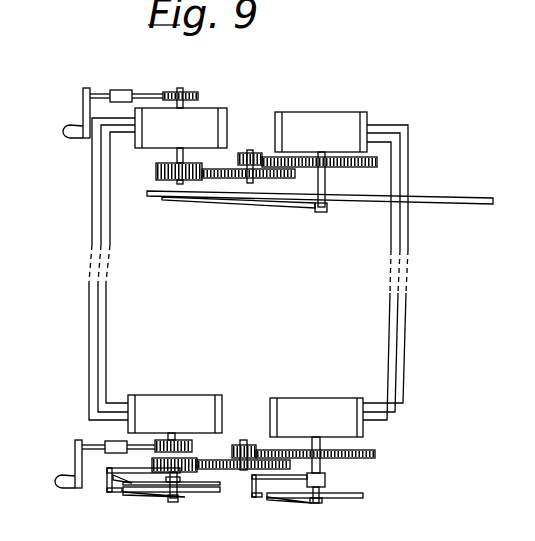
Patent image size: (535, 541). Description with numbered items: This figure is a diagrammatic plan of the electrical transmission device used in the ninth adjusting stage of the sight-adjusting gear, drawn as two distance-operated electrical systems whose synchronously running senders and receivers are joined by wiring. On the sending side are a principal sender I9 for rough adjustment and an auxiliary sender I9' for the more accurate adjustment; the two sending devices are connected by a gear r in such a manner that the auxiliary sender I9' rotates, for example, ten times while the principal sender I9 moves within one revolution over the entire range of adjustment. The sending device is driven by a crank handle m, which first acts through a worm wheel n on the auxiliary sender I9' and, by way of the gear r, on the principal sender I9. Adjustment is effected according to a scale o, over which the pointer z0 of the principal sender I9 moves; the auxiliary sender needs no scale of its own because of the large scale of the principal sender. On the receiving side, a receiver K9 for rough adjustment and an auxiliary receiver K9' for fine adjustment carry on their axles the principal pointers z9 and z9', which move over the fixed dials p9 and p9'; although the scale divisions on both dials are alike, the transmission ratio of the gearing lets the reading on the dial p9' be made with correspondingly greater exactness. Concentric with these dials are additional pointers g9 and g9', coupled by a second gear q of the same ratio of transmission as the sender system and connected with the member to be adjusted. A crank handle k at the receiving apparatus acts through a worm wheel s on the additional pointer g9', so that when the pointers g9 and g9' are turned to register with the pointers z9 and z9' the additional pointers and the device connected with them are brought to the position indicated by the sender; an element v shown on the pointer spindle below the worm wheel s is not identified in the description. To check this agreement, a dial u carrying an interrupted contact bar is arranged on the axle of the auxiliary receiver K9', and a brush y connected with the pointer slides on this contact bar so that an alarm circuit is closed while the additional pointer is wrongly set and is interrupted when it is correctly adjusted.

The crank handle m is at (82, 112).
The worm wheel n is at (163, 93).
The principal sender I9 is at (321, 147).
The auxiliary sender I9' is at (187, 133).
The gear r is at (289, 153).
The scale o is at (381, 198).
The pointer of the principal sender z0 is at (267, 201).
The receiver K9 is at (316, 439).
The auxiliary receiver K9' is at (175, 404).
The worm wheel s is at (157, 442).
The crank handle k is at (76, 460).
The gear v is at (177, 490).
The second gear q is at (244, 443).
The additional pointer g9 is at (277, 498).
The additional pointer g9' is at (140, 495).
The brush y is at (114, 476).
The dial u is at (220, 483).
The fixed dial p9 is at (315, 507).
The fixed dial p9' is at (174, 504).
The principal pointer z9 is at (289, 511).
The principal pointer z9' is at (154, 508).